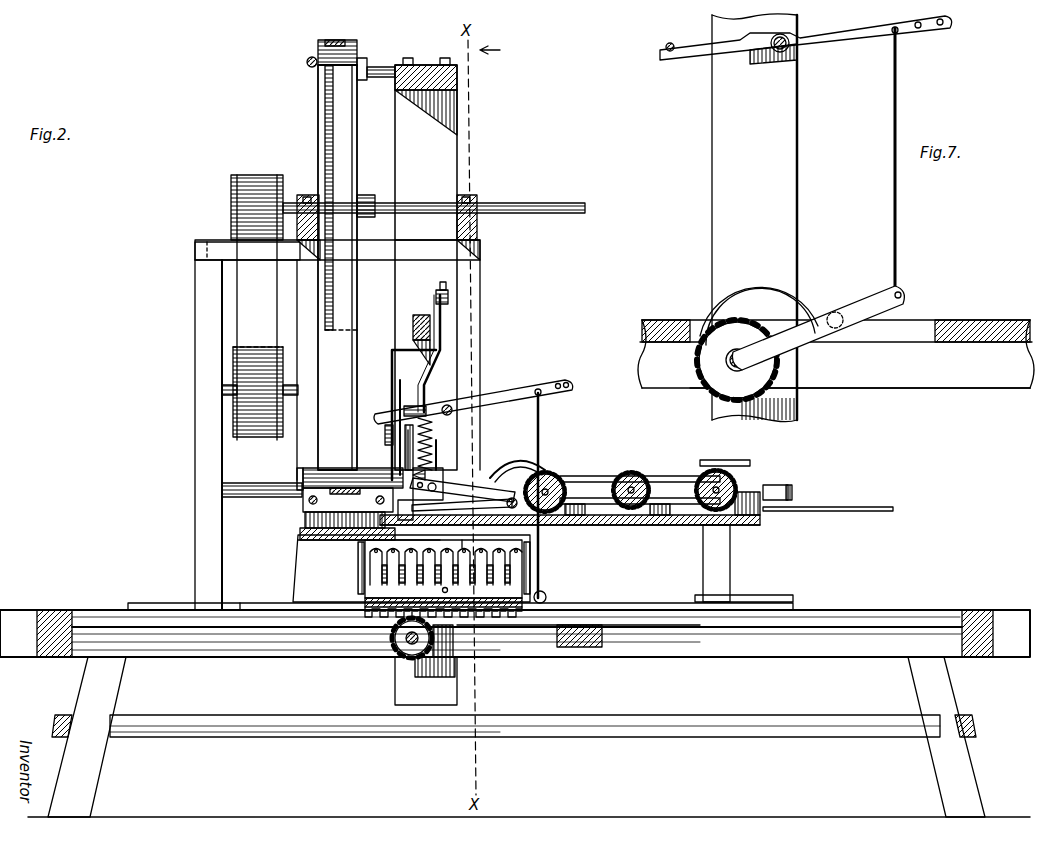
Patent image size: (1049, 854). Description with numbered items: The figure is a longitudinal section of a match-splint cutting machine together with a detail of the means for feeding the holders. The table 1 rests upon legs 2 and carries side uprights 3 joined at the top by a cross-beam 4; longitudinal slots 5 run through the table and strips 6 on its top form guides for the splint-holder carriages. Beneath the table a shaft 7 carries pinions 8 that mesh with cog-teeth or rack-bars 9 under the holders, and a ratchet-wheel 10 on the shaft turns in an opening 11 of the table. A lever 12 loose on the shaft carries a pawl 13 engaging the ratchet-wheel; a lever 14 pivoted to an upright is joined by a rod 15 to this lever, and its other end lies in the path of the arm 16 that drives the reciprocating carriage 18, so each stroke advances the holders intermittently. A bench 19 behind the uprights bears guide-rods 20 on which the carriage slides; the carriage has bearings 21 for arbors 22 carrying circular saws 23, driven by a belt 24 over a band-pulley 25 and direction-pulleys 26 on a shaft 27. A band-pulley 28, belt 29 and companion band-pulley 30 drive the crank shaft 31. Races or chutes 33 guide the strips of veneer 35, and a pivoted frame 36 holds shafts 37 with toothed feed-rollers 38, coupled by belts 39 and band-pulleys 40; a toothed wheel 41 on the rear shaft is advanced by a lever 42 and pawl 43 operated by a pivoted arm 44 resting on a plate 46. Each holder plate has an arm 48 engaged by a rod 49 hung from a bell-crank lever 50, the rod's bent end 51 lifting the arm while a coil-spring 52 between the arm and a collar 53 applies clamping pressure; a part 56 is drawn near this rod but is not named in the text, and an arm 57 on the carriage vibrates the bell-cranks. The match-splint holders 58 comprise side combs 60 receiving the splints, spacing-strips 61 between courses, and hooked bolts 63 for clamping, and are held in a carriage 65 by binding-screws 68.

In FIG. 2, the table 1 is at (515, 620).
In FIG. 7, the table 1 is at (836, 339).
In FIG. 2, the legs 2 is at (112, 712).
In FIG. 2, the uprights 3 is at (460, 143).
In FIG. 7, the uprights 3 is at (754, 218).
In FIG. 2, the cross-beam 4 is at (420, 70).
In FIG. 2, the longitudinal slots 5 is at (105, 618).
In FIG. 2, the strips 6 is at (172, 612).
In FIG. 2, the shaft 7 is at (400, 656).
In FIG. 2, the pinions 8 is at (415, 665).
In FIG. 2, the cog-teeth or rack-bars 9 is at (505, 620).
In FIG. 7, the ratchet-wheel 10 is at (720, 385).
In FIG. 7, the opening 11 is at (893, 345).
In FIG. 2, the lever 12 is at (548, 592).
In FIG. 7, the lever 12 is at (855, 302).
In FIG. 7, the pawl 13 is at (786, 300).
In FIG. 2, the lever 14 is at (490, 397).
In FIG. 7, the lever 14 is at (828, 50).
In FIG. 2, the rod 15 is at (545, 430).
In FIG. 7, the rod 15 is at (893, 168).
In FIG. 7, the arm 16 is at (668, 42).
In FIG. 2, the reciprocating carriage 18 is at (300, 506).
In FIG. 2, the bench 19 is at (312, 540).
In FIG. 2, the guide-rods 20 is at (348, 508).
In FIG. 2, the bearings 21 is at (302, 466).
In FIG. 2, the arbors 22 is at (300, 478).
In FIG. 2, the circular saws 23 is at (423, 484).
In FIG. 2, the belt 24 is at (337, 40).
In FIG. 2, the band-pulley 25 is at (325, 125).
In FIG. 2, the direction-pulleys 26 is at (360, 50).
In FIG. 2, the shaft 27 is at (505, 203).
In FIG. 2, the band-pulley 28 is at (231, 185).
In FIG. 2, the belt 29 is at (257, 307).
In FIG. 2, the band-pulley 30 is at (236, 368).
In FIG. 2, the shaft 31 is at (225, 392).
In FIG. 2, the races or chutes 33 is at (652, 530).
In FIG. 2, the strips of veneer 35 is at (855, 500).
In FIG. 2, the frame 36 is at (686, 478).
In FIG. 2, the shafts 37 is at (648, 480).
In FIG. 2, the feed-rollers 38 is at (735, 470).
In FIG. 2, the belts 39 is at (612, 476).
In FIG. 2, the band-pulleys 40 is at (408, 514).
In FIG. 2, the toothed wheel 41 is at (553, 478).
In FIG. 2, the lever 42 is at (460, 478).
In FIG. 2, the pawl 43 is at (512, 462).
In FIG. 2, the pivoted arm 44 is at (398, 395).
In FIG. 2, the plate 46 is at (238, 482).
In FIG. 2, the arm 48 is at (445, 452).
In FIG. 2, the rod 49 is at (443, 350).
In FIG. 2, the bell-crank lever 50 is at (392, 362).
In FIG. 2, the bent end 51 is at (409, 444).
In FIG. 2, the coil-spring 52 is at (436, 444).
In FIG. 2, the collar 53 is at (428, 408).
In FIG. 2, the collar 56 is at (385, 420).
In FIG. 2, the arm 57 is at (403, 450).
In FIG. 2, the match-splint holders 58 is at (373, 560).
In FIG. 2, the side combs 60 is at (383, 570).
In FIG. 2, the spacing-strip 61 is at (471, 536).
In FIG. 2, the hooked bolts 63 is at (356, 548).
In FIG. 2, the carriage 65 is at (365, 602).
In FIG. 2, the binding-screws 68 is at (448, 590).